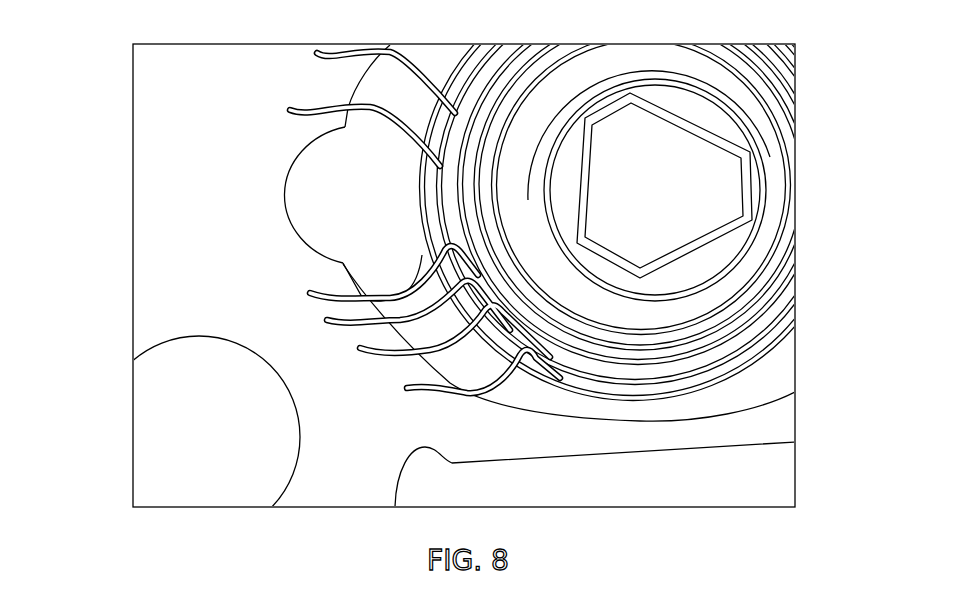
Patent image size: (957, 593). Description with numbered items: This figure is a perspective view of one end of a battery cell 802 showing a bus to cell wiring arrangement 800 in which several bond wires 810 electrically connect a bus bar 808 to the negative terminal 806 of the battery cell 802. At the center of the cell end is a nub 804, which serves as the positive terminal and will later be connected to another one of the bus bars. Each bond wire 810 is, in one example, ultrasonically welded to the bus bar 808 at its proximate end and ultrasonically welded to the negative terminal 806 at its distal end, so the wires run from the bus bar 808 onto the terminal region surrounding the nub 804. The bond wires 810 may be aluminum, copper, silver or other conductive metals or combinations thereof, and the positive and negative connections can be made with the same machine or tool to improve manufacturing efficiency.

The bus to cell wiring arrangement 800 is at (124, 20).
The battery cell 802 is at (752, 113).
The nub 804 is at (725, 193).
The negative terminal 806 is at (773, 331).
The bus bar 808 is at (167, 204).
The bond wires 810 is at (290, 116).